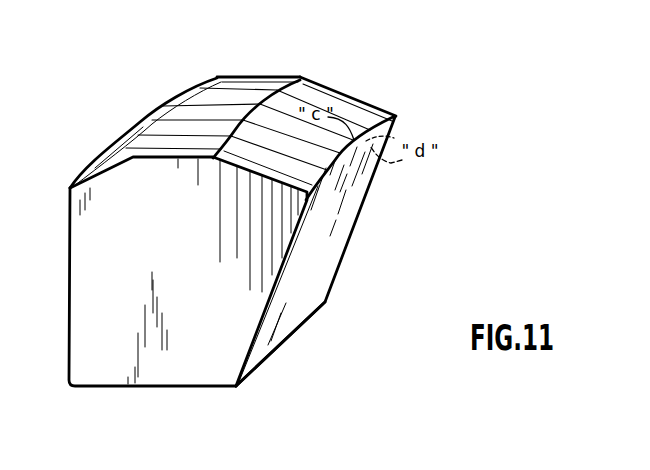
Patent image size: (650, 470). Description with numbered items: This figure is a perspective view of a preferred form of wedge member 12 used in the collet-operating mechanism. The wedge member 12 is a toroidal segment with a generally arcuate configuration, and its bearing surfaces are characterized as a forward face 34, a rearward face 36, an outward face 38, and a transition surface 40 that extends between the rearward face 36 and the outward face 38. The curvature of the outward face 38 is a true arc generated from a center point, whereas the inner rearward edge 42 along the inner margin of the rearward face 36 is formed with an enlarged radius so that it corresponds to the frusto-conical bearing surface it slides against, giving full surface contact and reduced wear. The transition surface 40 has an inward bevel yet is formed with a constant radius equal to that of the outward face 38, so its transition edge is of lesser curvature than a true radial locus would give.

The wedge member 12 is at (221, 66).
The forward face 34 is at (68, 352).
The rearward face 36 is at (300, 273).
The outward face 38 is at (248, 92).
The transition surface 40 is at (247, 148).
The inner rearward edge 42 is at (265, 348).